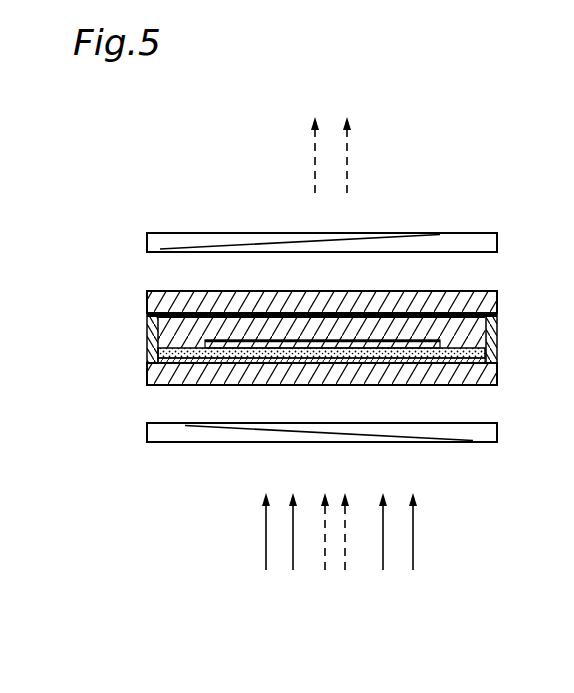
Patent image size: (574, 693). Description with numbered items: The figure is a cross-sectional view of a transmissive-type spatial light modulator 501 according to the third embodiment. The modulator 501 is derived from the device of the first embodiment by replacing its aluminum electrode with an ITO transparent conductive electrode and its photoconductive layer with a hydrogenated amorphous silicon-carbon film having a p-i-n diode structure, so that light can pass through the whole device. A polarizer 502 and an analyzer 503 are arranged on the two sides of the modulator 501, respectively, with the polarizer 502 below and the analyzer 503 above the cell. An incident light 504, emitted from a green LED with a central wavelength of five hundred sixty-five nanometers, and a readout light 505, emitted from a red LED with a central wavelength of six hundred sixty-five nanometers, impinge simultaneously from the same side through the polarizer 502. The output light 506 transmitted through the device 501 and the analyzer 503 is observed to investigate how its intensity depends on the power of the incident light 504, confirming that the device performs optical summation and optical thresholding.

The spatial light modulator 501 is at (118, 293).
The polarizer 502 is at (146, 436).
The analyzer 503 is at (146, 243).
The incident light 504 is at (294, 585).
The readout light 505 is at (351, 585).
The output light 506 is at (353, 108).